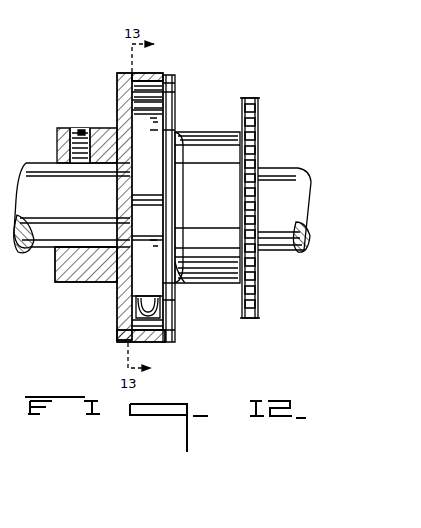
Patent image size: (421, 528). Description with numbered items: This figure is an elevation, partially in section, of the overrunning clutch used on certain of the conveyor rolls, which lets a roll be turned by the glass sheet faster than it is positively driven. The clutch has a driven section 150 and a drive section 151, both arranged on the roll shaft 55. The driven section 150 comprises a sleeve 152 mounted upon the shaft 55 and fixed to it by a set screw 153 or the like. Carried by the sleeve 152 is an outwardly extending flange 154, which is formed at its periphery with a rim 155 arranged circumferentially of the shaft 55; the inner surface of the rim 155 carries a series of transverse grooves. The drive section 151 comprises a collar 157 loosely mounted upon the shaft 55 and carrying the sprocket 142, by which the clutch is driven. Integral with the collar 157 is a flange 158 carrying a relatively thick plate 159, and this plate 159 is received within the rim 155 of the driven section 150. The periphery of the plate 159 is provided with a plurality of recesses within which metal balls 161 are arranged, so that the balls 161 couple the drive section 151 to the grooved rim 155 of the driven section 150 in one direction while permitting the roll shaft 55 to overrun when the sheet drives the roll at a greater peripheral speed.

The shaft 55 is at (40, 246).
The sprocket 142 is at (258, 122).
The driven section 150 is at (103, 122).
The drive section 151 is at (200, 133).
The sleeve 152 is at (72, 282).
The set screw 153 is at (57, 136).
The flange 154 is at (119, 326).
The rim 155 is at (146, 75).
The collar 157 is at (190, 283).
The flange 158 is at (170, 95).
The plate 159 is at (138, 180).
The metal balls 161 is at (151, 298).